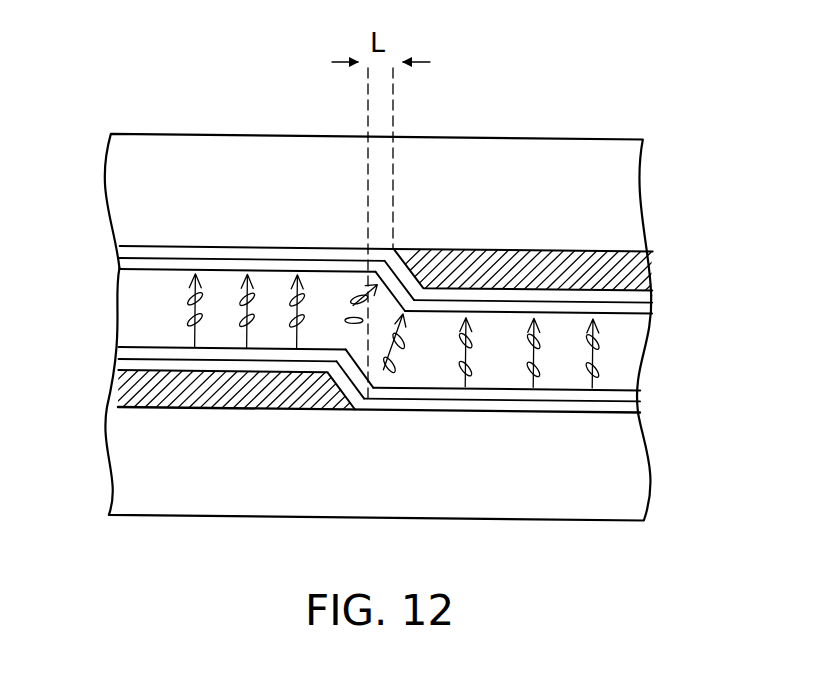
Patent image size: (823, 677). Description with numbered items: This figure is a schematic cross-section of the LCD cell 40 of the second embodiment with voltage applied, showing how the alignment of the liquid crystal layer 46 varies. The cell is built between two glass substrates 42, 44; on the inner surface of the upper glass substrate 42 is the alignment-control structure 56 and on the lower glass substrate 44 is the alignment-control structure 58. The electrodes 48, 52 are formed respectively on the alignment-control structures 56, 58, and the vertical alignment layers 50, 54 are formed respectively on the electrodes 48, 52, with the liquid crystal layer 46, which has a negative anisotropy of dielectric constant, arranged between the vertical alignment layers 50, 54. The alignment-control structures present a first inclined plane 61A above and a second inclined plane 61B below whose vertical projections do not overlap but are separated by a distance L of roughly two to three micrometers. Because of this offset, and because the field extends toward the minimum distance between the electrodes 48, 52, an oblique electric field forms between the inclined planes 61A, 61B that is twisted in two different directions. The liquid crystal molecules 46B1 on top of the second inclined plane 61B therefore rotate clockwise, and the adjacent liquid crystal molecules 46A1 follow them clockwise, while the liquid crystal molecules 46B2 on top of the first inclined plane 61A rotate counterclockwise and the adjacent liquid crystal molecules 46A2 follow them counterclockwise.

The LCD cell 40 is at (618, 56).
The glass substrate 42 is at (617, 192).
The glass substrate 44 is at (630, 485).
The liquid crystal layer 46 is at (615, 360).
The liquid crystal molecules 46A1 is at (287, 296).
The liquid crystal molecules 46A2 is at (538, 333).
The liquid crystal molecules 46B1 is at (357, 293).
The liquid crystal molecules 46B2 is at (404, 340).
The electrode 48 is at (615, 296).
The vertical alignment layer 50 is at (132, 262).
The electrode 52 is at (615, 402).
The vertical alignment layer 54 is at (130, 350).
The alignment-control structure 56 is at (620, 267).
The alignment-control structure 58 is at (128, 388).
The first inclined plane 61A is at (390, 282).
The second inclined plane 61B is at (360, 370).